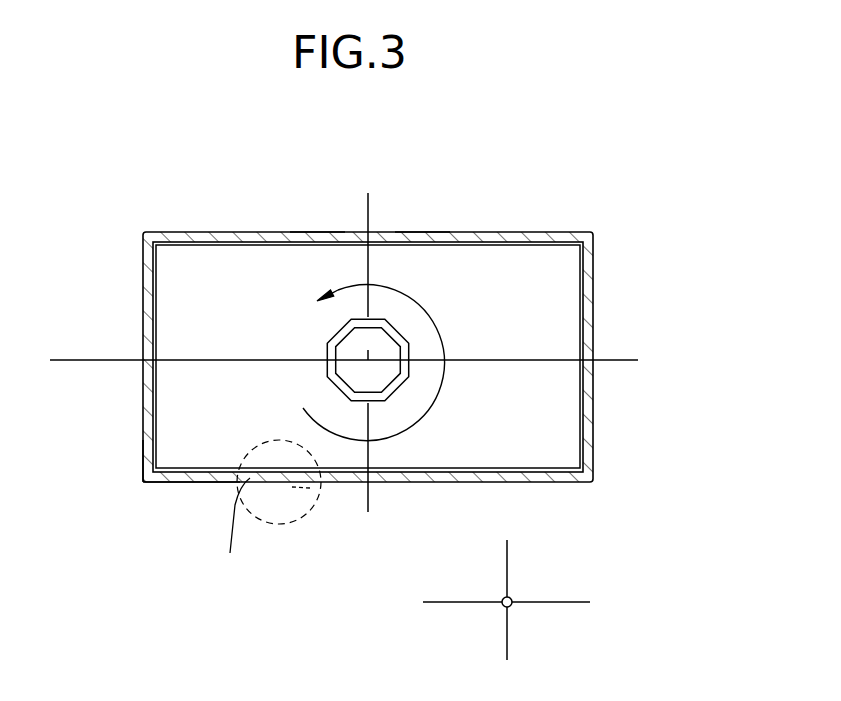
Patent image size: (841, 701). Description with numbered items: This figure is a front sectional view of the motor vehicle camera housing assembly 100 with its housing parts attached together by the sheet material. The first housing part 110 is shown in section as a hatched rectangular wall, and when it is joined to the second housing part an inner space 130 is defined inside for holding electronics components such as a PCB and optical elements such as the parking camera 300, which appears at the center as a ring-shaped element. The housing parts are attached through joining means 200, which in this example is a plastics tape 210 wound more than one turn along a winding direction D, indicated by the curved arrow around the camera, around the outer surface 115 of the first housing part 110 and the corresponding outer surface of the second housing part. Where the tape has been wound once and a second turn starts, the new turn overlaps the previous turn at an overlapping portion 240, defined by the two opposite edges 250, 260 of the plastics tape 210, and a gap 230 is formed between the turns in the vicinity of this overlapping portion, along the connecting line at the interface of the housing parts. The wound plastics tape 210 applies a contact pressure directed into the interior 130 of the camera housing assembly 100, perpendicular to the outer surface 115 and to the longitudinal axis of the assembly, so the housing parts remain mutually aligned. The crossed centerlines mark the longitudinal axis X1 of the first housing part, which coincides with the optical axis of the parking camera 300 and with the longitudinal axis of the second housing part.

The motor vehicle camera housing assembly 100 is at (368, 292).
The first housing part 110 is at (582, 281).
The outer surface of the first housing part 115 is at (422, 231).
The inner space 130 is at (174, 292).
The joining means 200 is at (314, 214).
The plastics tape 210 is at (108, 469).
The gap 230 is at (202, 482).
The overlapping portion 240 is at (279, 519).
The first edge of the plastics tape 250 is at (313, 488).
The second edge of the plastics tape 260 is at (222, 537).
The parking camera 300 is at (333, 333).
The winding direction D is at (373, 346).
The longitudinal axis of the first housing part X1 is at (368, 360).